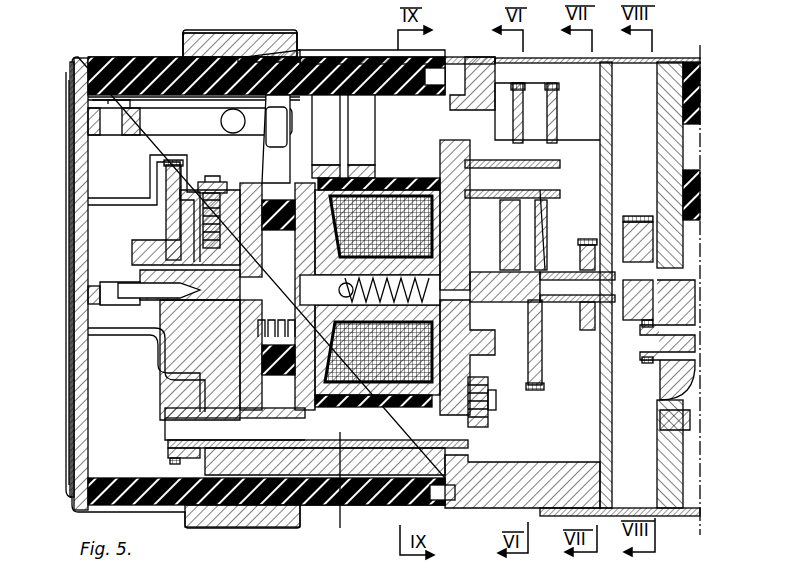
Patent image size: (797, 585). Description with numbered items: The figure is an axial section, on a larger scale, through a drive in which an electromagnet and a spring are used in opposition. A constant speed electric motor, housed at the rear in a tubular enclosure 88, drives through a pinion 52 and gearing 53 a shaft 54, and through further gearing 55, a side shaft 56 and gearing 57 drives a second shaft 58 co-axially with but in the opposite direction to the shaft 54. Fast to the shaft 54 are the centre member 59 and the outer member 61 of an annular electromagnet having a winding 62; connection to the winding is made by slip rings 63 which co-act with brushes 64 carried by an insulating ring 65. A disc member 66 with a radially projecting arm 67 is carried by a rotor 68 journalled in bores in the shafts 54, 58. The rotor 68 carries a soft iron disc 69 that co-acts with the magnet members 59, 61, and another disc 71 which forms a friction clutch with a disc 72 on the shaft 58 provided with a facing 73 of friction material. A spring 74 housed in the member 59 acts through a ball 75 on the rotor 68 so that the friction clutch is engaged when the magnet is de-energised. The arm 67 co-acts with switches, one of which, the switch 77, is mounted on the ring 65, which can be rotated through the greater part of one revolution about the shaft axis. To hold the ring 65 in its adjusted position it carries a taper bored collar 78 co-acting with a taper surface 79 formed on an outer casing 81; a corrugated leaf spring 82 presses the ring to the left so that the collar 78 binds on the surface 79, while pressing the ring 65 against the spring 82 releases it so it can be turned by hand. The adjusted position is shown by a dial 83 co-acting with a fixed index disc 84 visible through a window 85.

The pinion 52 is at (648, 364).
The gearing 53 is at (623, 224).
The shaft 54 is at (485, 302).
The further gearing 55 is at (496, 410).
The side shaft 56 is at (351, 493).
The gearing 57 is at (168, 414).
The second shaft 58 is at (150, 276).
The centre member 59 is at (388, 250).
The outer member 61 is at (300, 165).
The winding 62 is at (395, 365).
The slip rings 63 is at (370, 176).
The brushes 64 is at (362, 156).
The insulating ring 65 is at (160, 60).
The disc member 66 is at (276, 358).
The arm 67 is at (262, 150).
The rotor 68 is at (195, 297).
The soft iron disc 69 is at (266, 186).
The disc 71 is at (200, 215).
The disc 72 is at (225, 228).
The facing 73 is at (247, 380).
The spring 74 is at (440, 294).
The ball 75 is at (345, 290).
The switch 77 is at (136, 138).
The taper bored collar 78 is at (252, 34).
The taper surface 79 is at (300, 52).
The outer casing 81 is at (350, 58).
The leaf spring 82 is at (458, 62).
The dial 83 is at (74, 452).
The index disc 84 is at (80, 195).
The window 85 is at (80, 458).
The tubular enclosure 88 is at (580, 60).